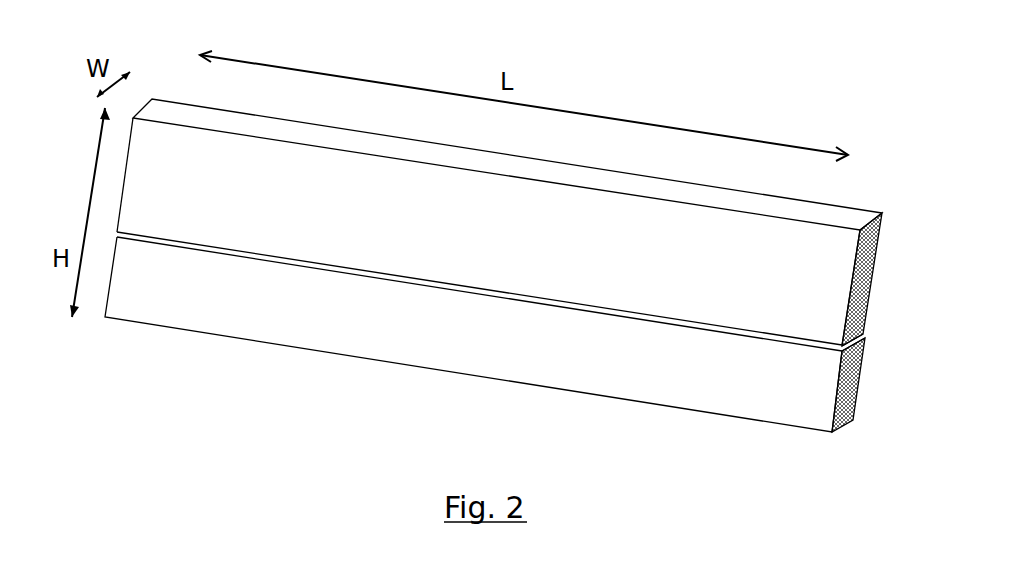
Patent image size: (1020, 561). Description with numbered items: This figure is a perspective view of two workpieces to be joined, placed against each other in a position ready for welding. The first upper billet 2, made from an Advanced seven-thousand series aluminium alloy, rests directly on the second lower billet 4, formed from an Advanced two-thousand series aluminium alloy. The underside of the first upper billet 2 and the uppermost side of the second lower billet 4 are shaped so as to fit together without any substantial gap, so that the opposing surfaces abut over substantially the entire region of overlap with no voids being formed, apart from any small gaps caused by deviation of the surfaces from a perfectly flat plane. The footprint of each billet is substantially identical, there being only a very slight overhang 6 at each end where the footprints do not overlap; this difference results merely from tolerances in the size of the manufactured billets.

The first upper billet 2 is at (483, 243).
The second lower billet 4 is at (440, 338).
The overhang 6 is at (104, 228).